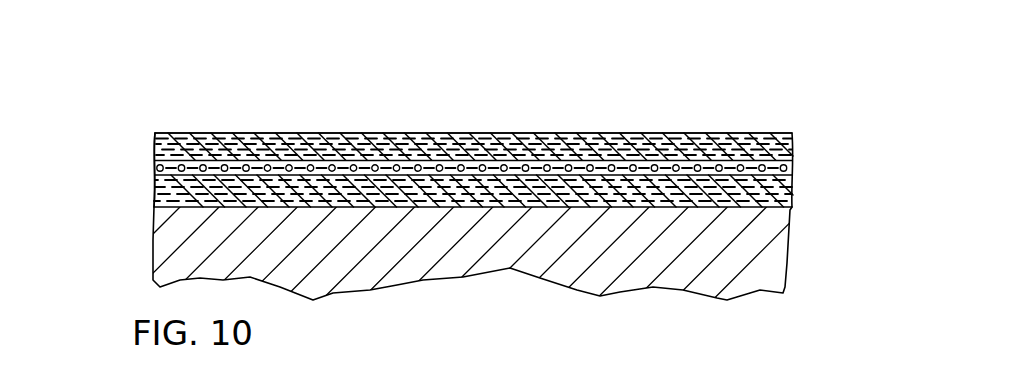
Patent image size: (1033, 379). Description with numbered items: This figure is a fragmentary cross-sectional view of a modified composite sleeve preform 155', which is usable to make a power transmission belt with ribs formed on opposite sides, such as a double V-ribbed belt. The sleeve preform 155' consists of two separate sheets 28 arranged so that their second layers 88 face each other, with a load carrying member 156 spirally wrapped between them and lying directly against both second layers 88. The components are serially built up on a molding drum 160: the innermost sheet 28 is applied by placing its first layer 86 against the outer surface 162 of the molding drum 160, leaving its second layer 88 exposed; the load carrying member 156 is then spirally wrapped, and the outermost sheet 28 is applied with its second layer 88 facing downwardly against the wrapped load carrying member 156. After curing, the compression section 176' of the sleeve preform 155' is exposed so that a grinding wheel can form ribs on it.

The sheet 28 is at (207, 133).
The composite sleeve preform 155' is at (124, 140).
The compression section 176' is at (473, 83).
The second layer 88 is at (286, 148).
The first layer 86 is at (660, 140).
The load carrying member 156 is at (432, 165).
The outer surface 162 is at (548, 207).
The molding drum 160 is at (691, 262).